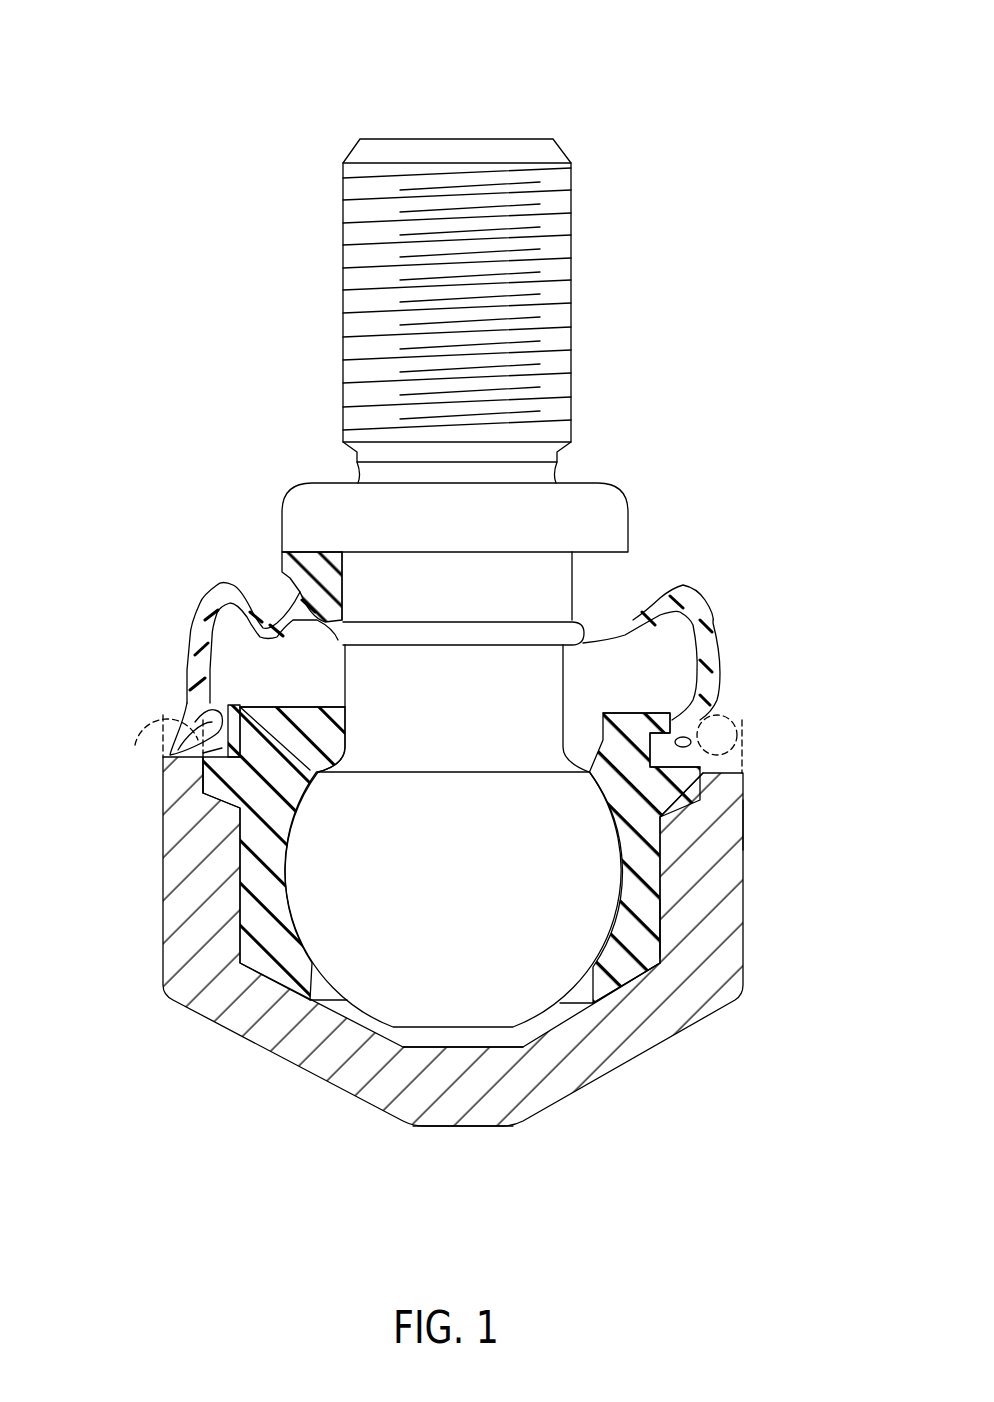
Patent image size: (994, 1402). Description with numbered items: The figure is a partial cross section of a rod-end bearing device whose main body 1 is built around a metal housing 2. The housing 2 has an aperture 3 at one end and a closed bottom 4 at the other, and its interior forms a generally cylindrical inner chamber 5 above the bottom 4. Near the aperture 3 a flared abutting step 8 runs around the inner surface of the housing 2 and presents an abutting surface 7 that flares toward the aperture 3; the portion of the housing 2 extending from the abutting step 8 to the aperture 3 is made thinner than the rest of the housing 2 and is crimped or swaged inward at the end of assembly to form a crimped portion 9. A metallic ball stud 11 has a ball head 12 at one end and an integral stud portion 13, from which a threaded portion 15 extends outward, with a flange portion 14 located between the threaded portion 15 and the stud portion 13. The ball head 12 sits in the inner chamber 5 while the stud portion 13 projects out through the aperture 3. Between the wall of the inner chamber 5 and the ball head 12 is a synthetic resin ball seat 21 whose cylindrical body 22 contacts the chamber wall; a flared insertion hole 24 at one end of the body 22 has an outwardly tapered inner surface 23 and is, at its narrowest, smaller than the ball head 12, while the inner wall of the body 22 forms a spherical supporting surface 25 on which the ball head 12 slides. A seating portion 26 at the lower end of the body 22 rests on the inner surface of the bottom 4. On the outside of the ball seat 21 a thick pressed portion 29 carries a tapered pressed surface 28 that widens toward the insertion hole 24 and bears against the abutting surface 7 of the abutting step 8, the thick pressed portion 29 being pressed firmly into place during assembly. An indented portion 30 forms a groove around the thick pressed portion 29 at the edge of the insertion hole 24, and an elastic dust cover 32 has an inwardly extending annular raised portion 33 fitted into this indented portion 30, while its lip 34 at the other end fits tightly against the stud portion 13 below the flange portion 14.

The main body 1 is at (730, 92).
The housing 2 is at (745, 848).
The aperture 3 is at (690, 740).
The bottom 4 is at (548, 1097).
The inner chamber 5 is at (443, 1040).
The abutting surface 7 is at (700, 778).
The abutting step 8 is at (708, 820).
The crimped portion 9 is at (138, 722).
The ball stud 11 is at (590, 472).
The ball head 12 is at (630, 965).
The stud portion 13 is at (528, 678).
The flange portion 14 is at (578, 527).
The threaded portion 15 is at (548, 205).
The ball seat 21 is at (650, 955).
The cylindrical body 22 is at (650, 895).
The tapered inner surface 23 is at (293, 733).
The insertion hole 24 is at (603, 715).
The spherical supporting surface 25 is at (290, 885).
The seating portion 26 is at (700, 1025).
The tapered pressed surface 28 is at (213, 795).
The thick pressed portion 29 is at (218, 788).
The indented portion 30 is at (203, 753).
The dust cover 32 is at (200, 600).
The annular raised portion 33 is at (225, 690).
The lip 34 is at (283, 582).